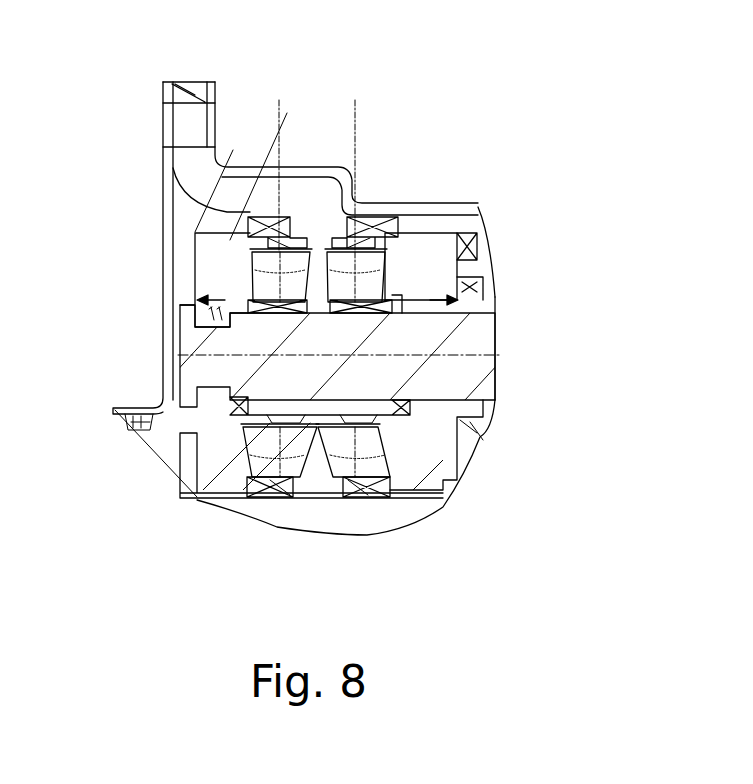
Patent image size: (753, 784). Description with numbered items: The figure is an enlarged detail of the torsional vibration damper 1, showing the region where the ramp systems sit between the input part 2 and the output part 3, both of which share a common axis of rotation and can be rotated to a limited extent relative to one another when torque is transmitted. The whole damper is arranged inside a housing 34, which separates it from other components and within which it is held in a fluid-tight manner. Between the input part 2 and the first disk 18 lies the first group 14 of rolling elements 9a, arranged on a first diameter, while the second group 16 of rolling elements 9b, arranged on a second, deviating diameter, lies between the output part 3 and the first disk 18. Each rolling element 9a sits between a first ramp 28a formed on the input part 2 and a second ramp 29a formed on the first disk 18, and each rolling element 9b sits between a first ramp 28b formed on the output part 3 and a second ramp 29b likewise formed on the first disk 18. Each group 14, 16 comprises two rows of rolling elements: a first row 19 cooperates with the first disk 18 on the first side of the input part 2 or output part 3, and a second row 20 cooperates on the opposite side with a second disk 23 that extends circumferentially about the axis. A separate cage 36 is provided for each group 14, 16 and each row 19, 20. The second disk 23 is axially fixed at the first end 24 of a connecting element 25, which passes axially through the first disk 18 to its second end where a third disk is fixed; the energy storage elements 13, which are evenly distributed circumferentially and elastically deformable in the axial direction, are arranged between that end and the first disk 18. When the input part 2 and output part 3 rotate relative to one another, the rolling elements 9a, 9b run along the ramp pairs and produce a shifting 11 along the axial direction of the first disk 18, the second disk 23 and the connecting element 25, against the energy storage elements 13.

The torsional vibration damper 1 is at (533, 99).
The input part 2 is at (190, 97).
The output part 3 is at (305, 532).
The rolling elements 9a is at (480, 280).
The rolling elements 9b is at (443, 420).
The shifting 11 is at (490, 303).
The energy storage elements 13 is at (480, 262).
The first group 14 is at (427, 260).
The second group 16 is at (413, 490).
The first disk 18 is at (480, 253).
The first row 19 is at (355, 163).
The second row 20 is at (279, 163).
The second disk 23 is at (195, 237).
The first end 24 is at (185, 345).
The connecting element 25 is at (493, 380).
The first ramps 28a is at (480, 210).
The first ramps 28b is at (417, 477).
The second ramps 29a is at (480, 343).
The second ramps 29b is at (245, 432).
The housing 34 is at (173, 365).
The cage 36 is at (287, 227).